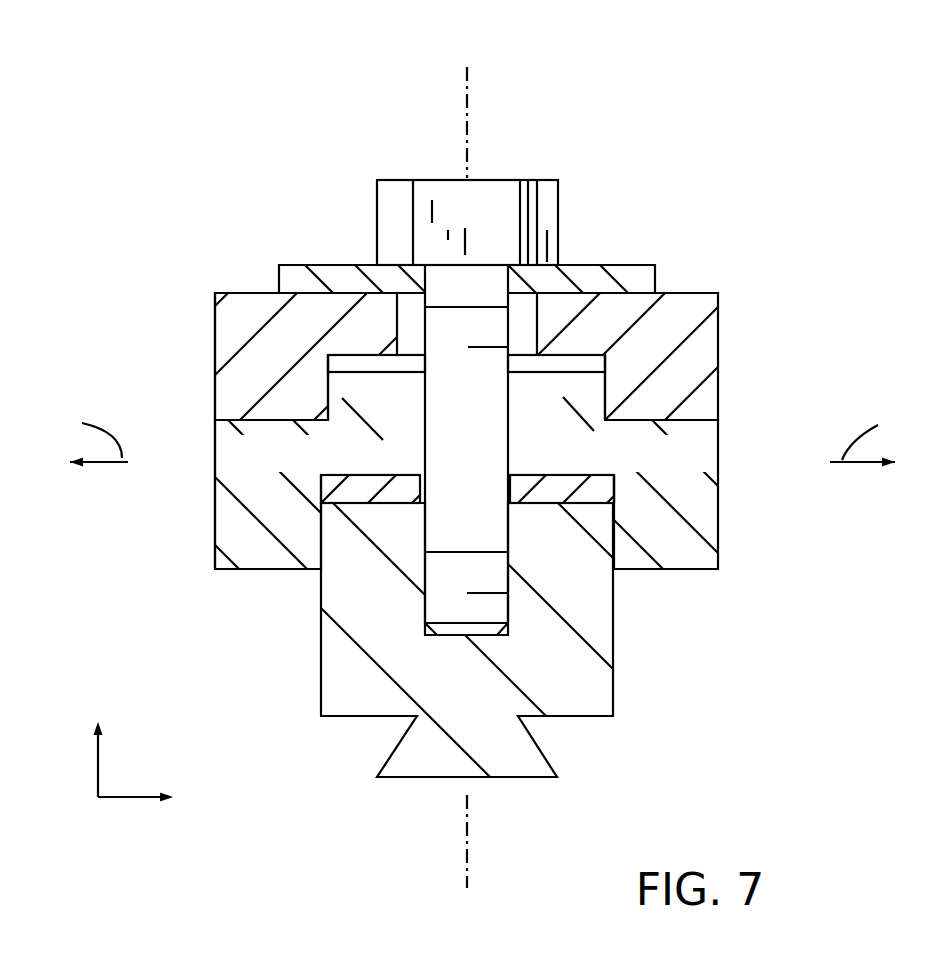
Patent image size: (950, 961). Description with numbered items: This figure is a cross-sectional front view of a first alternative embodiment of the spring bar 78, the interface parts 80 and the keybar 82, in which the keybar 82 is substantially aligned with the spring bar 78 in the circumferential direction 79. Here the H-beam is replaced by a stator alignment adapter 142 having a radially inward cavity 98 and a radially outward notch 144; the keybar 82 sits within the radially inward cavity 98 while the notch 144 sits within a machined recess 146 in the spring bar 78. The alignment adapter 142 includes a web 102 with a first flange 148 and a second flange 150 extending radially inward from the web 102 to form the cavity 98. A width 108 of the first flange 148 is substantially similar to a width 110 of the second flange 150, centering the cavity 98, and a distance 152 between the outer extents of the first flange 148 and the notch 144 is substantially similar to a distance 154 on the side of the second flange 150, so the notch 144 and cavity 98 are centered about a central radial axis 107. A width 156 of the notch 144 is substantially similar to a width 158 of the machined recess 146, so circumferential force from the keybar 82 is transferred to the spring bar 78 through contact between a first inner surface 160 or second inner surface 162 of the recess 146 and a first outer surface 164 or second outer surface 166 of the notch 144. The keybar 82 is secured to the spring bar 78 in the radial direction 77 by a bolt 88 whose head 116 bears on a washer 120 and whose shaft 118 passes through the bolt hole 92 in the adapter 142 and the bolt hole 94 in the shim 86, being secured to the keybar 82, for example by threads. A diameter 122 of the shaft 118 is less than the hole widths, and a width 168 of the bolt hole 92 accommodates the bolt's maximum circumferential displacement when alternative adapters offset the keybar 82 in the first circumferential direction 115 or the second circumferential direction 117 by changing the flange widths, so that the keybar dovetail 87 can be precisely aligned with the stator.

The radial direction 77 is at (97, 787).
The spring bar 78 is at (680, 292).
The circumferential direction 79 is at (142, 797).
The interface parts 80 is at (130, 534).
The keybar 82 is at (321, 685).
The shim 86 is at (343, 495).
The keybar dovetail 87 is at (508, 669).
The bolt 88 is at (492, 447).
The bolt hole 92 is at (397, 423).
The bolt hole 94 is at (425, 498).
The radially inward cavity 98 is at (388, 590).
The web 102 is at (602, 462).
The central radial axis 107 is at (468, 78).
The width of the first flange 108 is at (687, 606).
The width of the second flange 110 is at (321, 604).
The first circumferential direction 115 is at (876, 438).
The head 116 is at (377, 193).
The second circumferential direction 117 is at (85, 438).
The shaft 118 is at (493, 607).
The washer 120 is at (278, 278).
The diameter of the shaft 122 is at (413, 777).
The stator alignment adapter 142 is at (215, 569).
The radially outward notch 144 is at (577, 388).
The machined recess 146 is at (380, 370).
The first flange 148 is at (706, 525).
The second flange 150 is at (237, 523).
The distance 152 is at (718, 447).
The distance 154 is at (328, 437).
The width of the notch 156 is at (331, 408).
The width of the machined recess 158 is at (327, 203).
The first inner surface 160 is at (605, 395).
The second inner surface 162 is at (328, 400).
The first outer surface 164 is at (603, 418).
The second outer surface 166 is at (330, 380).
The width of the bolt hole 168 is at (397, 457).